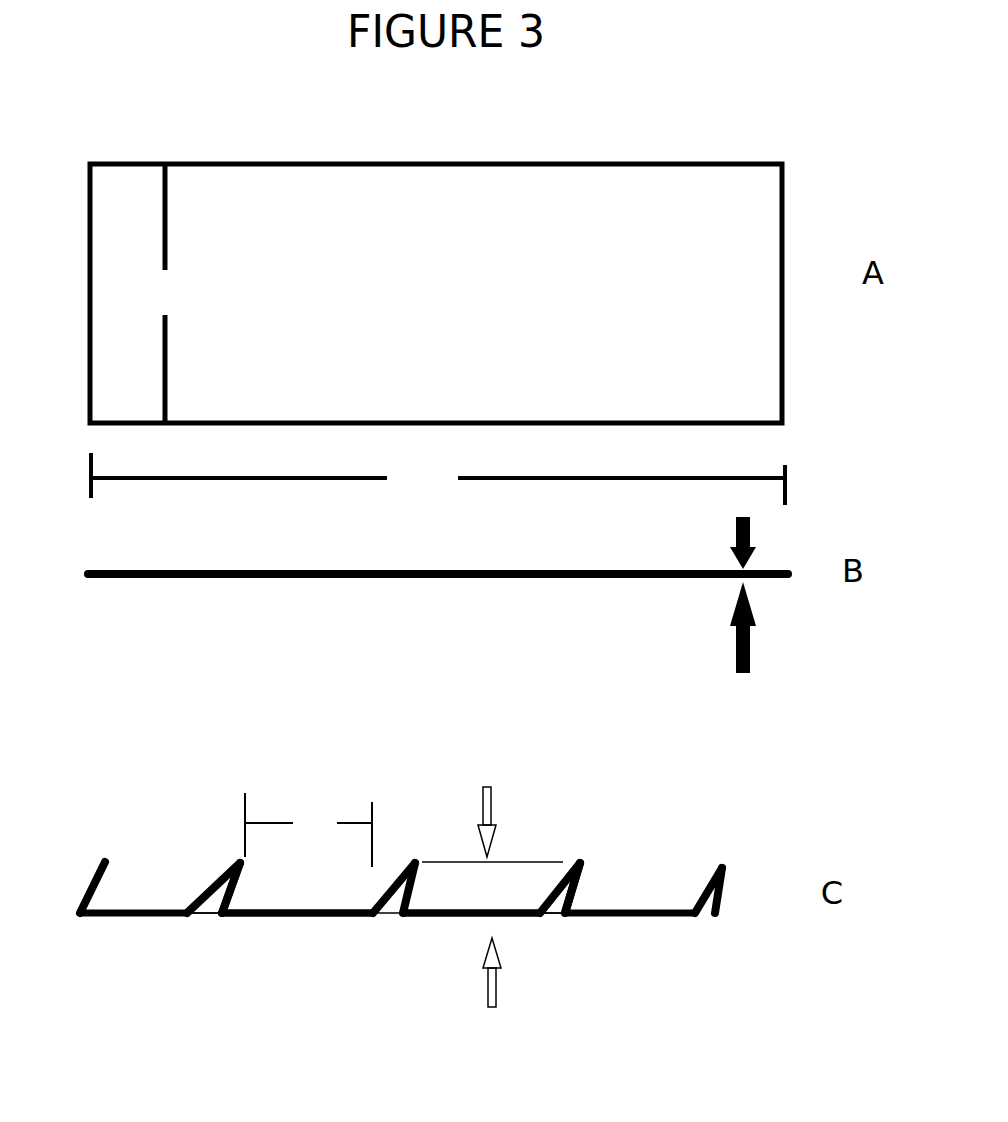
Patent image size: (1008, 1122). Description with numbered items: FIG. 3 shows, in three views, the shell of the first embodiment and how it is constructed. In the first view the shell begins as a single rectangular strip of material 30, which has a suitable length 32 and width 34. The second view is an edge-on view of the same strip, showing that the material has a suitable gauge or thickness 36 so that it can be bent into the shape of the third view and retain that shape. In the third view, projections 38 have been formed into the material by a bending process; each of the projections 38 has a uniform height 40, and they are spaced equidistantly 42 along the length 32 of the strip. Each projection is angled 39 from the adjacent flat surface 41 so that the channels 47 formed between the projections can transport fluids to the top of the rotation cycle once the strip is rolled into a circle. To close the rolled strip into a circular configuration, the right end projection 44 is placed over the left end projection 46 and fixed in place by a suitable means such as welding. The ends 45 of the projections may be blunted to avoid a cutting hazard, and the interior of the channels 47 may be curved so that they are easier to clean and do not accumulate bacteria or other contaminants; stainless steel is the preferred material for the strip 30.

The rectangular strip of material 30 is at (575, 195).
The length 32 is at (438, 479).
The width 34 is at (169, 294).
The thickness 36 is at (757, 590).
The projections 38 is at (575, 850).
The angle 39 is at (245, 895).
The height 40 is at (468, 897).
The flat surface 41 is at (305, 925).
The spacing 42 is at (308, 830).
The right end projection 44 is at (728, 863).
The ends of the projection 45 is at (235, 858).
The left end projection 46 is at (97, 852).
The channels 47 is at (557, 905).